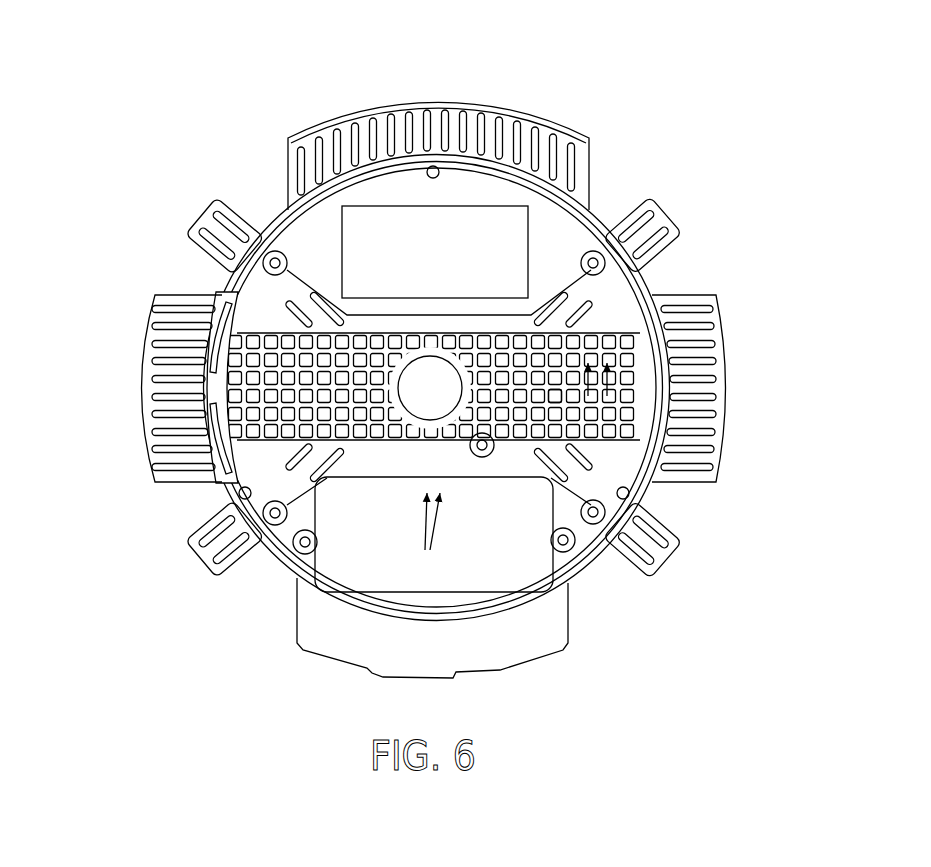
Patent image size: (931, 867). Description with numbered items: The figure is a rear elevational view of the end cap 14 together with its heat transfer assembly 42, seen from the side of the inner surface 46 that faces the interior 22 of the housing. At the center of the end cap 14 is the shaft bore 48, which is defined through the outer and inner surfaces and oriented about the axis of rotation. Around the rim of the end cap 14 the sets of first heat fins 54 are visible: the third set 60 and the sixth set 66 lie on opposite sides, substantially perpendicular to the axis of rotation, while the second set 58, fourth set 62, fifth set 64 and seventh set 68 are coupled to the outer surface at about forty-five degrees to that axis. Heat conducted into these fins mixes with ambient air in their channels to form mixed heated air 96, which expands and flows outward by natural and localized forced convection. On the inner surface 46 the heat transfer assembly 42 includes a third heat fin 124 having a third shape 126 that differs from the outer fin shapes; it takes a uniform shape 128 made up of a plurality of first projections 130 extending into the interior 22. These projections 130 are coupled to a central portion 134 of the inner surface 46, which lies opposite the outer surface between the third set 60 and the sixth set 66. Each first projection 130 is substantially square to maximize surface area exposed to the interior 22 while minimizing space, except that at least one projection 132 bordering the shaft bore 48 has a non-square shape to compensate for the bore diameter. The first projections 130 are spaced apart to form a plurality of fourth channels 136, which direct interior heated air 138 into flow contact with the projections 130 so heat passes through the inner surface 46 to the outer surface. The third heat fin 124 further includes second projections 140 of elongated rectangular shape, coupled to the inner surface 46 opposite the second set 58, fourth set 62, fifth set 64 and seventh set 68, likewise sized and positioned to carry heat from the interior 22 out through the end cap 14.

The end cap 14 is at (258, 75).
The interior 22 is at (472, 202).
The heat transfer assembly 42 is at (578, 142).
The inner surface 46 is at (360, 463).
The shaft bore 48 is at (437, 356).
The first heat fins 54 is at (705, 402).
The second set of first heat fins 58 is at (240, 223).
The third set of first heat fins 60 is at (143, 330).
The fourth set of first heat fins 62 is at (196, 560).
The fifth set of first heat fins 64 is at (670, 557).
The sixth set of first heat fins 66 is at (717, 330).
The seventh set of first heat fins 68 is at (670, 212).
The mixed heated air 96 is at (605, 383).
The third heat fin 124 is at (279, 428).
The third shape 126 is at (257, 410).
The uniform shape 128 is at (221, 388).
The first projections 130 is at (270, 360).
The non-square projection 132 is at (463, 415).
The central portion 134 is at (420, 457).
The fourth channels 136 is at (553, 407).
The interior heated air 138 is at (430, 534).
The second projections 140 is at (312, 283).